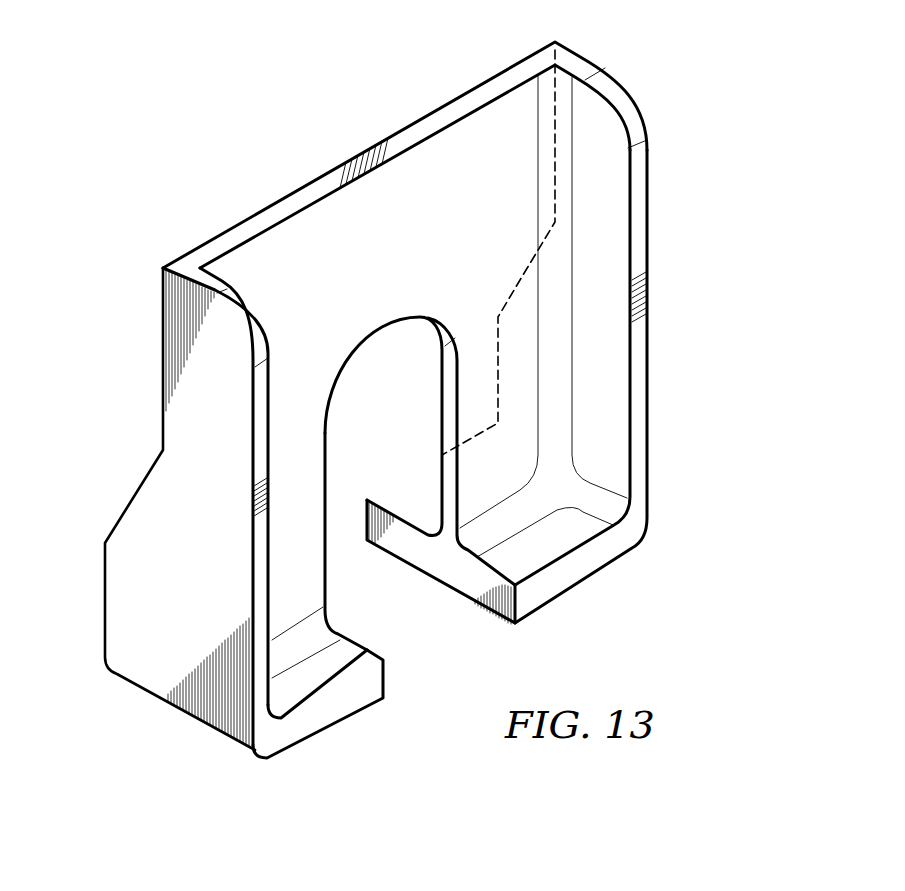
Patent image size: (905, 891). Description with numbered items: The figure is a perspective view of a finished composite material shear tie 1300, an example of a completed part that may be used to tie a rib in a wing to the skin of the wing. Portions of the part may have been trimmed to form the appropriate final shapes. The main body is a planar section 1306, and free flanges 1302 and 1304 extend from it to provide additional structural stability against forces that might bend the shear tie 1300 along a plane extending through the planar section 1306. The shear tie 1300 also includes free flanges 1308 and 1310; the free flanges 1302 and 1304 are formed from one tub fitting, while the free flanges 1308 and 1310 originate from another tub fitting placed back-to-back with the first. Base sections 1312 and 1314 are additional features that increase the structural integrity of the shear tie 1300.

The shear tie 1300 is at (385, 404).
The free flange 1302 is at (262, 545).
The free flange 1304 is at (638, 435).
The planar section 1306 is at (412, 173).
The free flange 1308 is at (130, 495).
The free flange 1310 is at (522, 275).
The base section 1312 is at (330, 715).
The base section 1314 is at (558, 583).